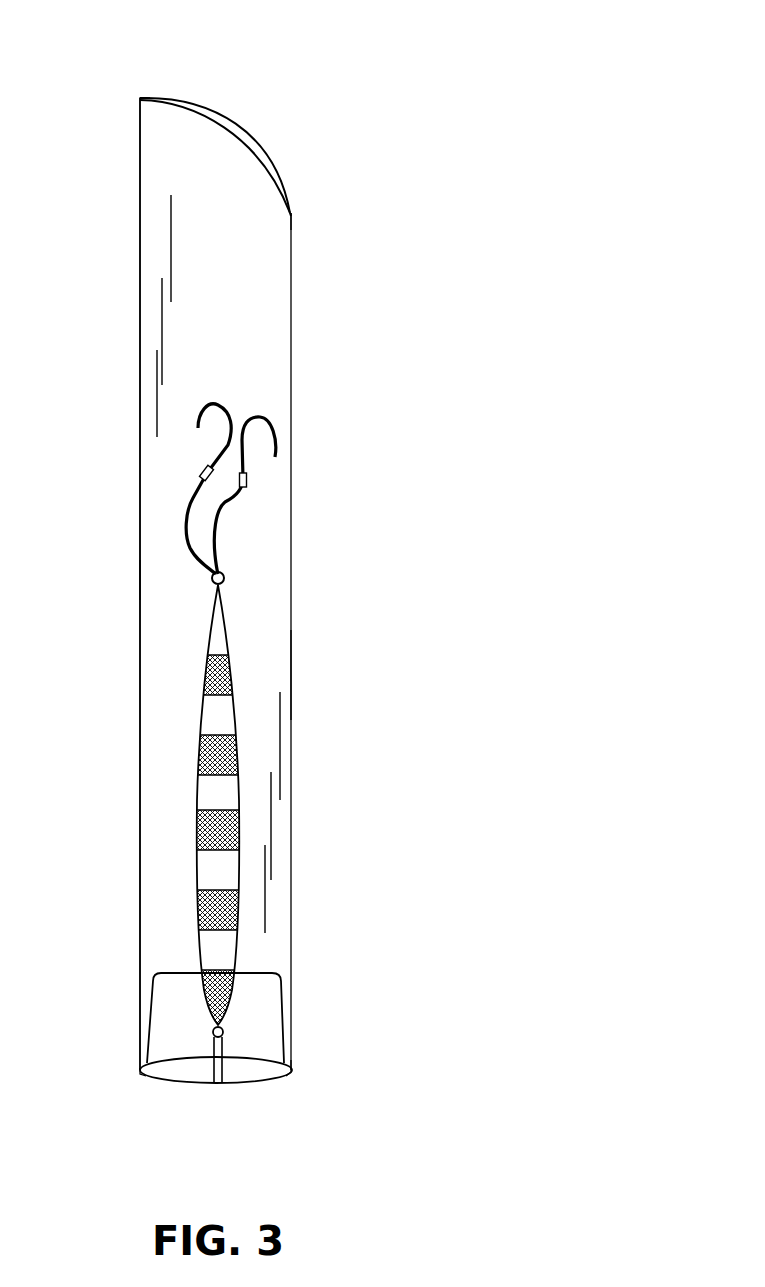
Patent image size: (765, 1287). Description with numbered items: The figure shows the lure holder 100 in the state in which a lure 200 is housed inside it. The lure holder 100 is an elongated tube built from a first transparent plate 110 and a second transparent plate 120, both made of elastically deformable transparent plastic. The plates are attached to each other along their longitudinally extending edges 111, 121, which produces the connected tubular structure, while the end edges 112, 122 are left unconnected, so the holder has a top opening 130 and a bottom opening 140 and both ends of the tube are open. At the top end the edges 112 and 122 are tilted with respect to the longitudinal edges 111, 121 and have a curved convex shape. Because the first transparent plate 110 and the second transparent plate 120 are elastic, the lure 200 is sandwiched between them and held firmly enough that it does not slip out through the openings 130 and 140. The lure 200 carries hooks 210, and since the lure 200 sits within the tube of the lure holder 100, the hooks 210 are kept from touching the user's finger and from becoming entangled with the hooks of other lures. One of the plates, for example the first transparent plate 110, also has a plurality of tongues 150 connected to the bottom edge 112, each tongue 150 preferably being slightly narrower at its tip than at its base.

The lure holder 100 is at (306, 311).
The first transparent plate 110 is at (162, 648).
The longitudinally extending edge 111 is at (140, 587).
The end edge 112 is at (273, 170).
The second transparent plate 120 is at (229, 130).
The longitudinally extending edge 121 is at (140, 532).
The end edge 122 is at (228, 104).
The top opening 130 is at (250, 140).
The bottom opening 140 is at (228, 1071).
The tongue 150 is at (180, 1013).
The lure 200 is at (215, 797).
The hook 210 is at (277, 413).